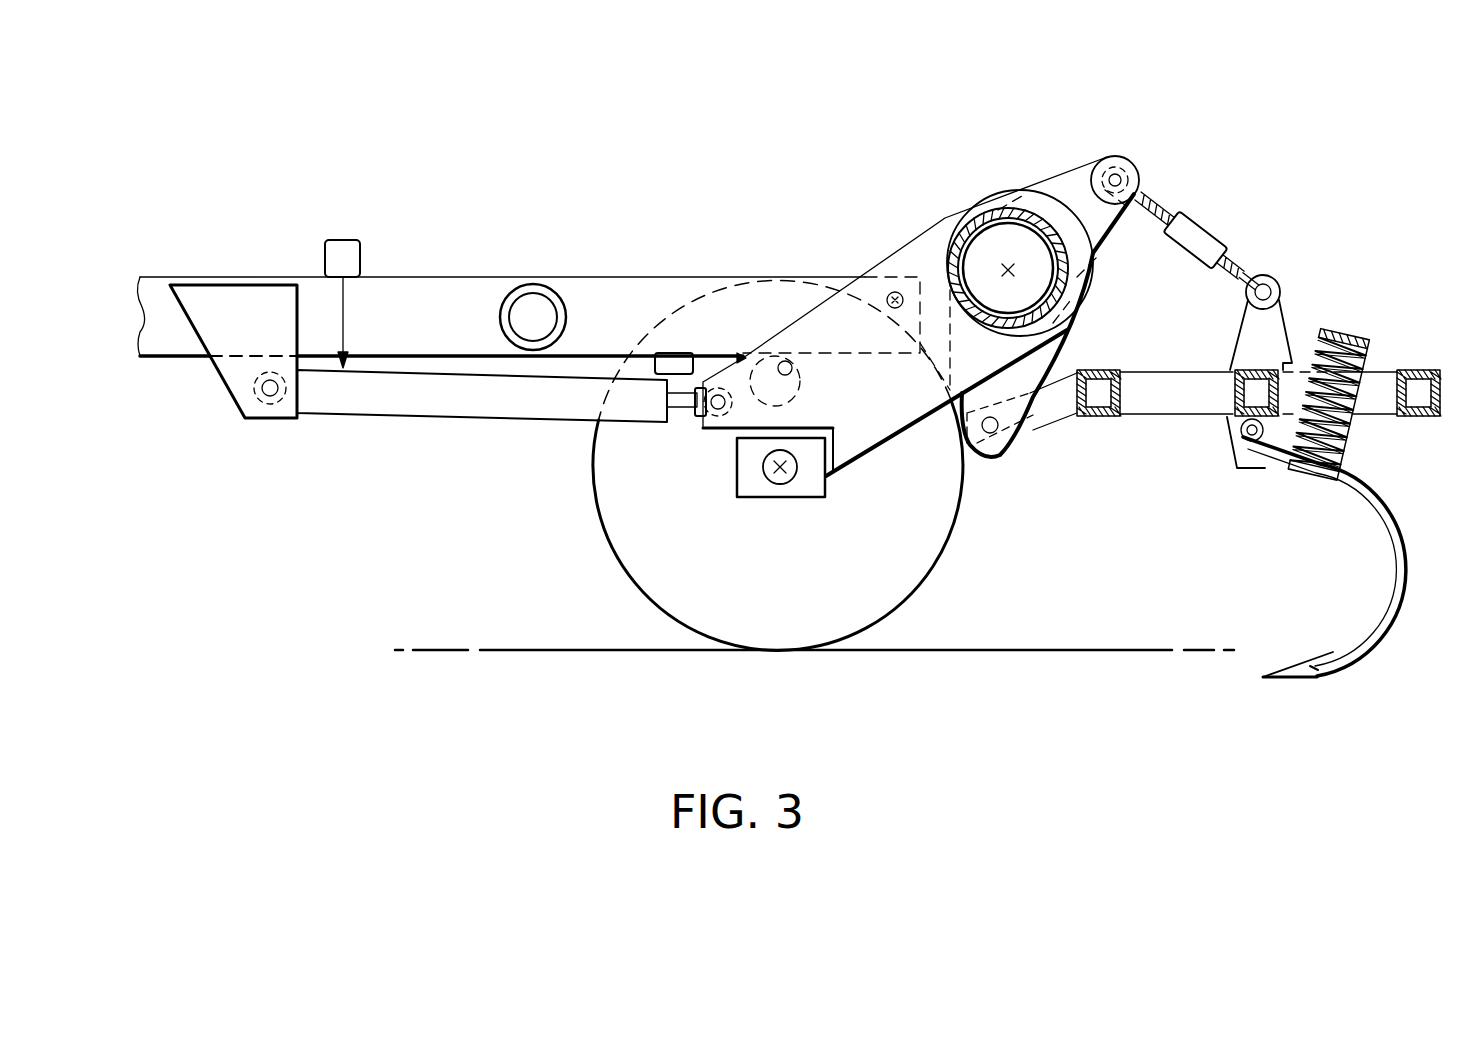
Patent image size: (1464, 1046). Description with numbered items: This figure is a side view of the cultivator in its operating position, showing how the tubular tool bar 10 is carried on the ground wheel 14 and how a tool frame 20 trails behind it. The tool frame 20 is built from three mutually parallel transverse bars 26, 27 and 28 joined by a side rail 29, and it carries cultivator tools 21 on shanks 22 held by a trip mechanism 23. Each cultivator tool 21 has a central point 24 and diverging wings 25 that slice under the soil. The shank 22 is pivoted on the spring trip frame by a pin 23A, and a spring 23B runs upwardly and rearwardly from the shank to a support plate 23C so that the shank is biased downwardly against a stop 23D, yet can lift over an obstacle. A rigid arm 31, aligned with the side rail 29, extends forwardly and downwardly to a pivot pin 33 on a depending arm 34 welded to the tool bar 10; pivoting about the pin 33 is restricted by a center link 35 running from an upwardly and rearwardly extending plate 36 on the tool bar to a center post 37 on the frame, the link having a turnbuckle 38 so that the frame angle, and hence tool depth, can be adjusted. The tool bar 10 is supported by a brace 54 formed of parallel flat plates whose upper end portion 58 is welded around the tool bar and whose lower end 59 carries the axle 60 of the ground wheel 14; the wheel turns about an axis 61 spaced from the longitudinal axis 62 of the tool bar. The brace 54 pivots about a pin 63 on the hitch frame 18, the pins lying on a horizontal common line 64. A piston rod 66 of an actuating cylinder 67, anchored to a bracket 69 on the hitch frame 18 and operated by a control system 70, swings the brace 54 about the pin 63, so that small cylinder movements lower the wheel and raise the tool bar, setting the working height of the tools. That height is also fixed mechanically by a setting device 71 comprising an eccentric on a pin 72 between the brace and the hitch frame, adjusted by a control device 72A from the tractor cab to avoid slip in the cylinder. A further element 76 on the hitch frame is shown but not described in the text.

The tool bar 10 is at (958, 220).
The ground wheel 14 is at (616, 565).
The hitch frame 18 is at (601, 262).
The tool frame 20 is at (1160, 362).
The cultivator tool 21 is at (1289, 656).
The shank 22 is at (1393, 530).
The trip mechanism 23 is at (1378, 343).
The pin 23A is at (1246, 434).
The spring 23B is at (1340, 440).
The support plate 23C is at (1340, 334).
The stop 23D is at (1256, 475).
The central point 24 is at (1263, 678).
The diverging wings 25 is at (1312, 680).
The transverse bar 26 is at (1407, 370).
The transverse bar 27 is at (1250, 370).
The transverse bar 28 is at (1103, 346).
The side rail 29 is at (1251, 419).
The rigid arm 31 is at (1058, 412).
The pivot pin 33 is at (978, 430).
The depending arm 34 is at (1008, 460).
The center link 35 is at (1186, 210).
The plate 36 is at (1085, 170).
The center post 37 is at (1284, 300).
The turnbuckle 38 is at (1210, 228).
The brace 54 is at (925, 257).
The upper end portion 58 is at (1050, 195).
The lower end 59 is at (858, 456).
The axle 60 is at (780, 490).
The axis 61 is at (770, 447).
The longitudinal axis 62 is at (1026, 266).
The pin 63 is at (895, 292).
The common line 64 is at (889, 308).
The piston rod 66 is at (692, 410).
The actuating cylinder 67 is at (478, 410).
The bracket 69 is at (230, 375).
The control system 70 is at (340, 238).
The mechanical setting device 71 is at (797, 392).
The pin 72 is at (792, 370).
The control device 72A is at (676, 353).
The tool bar tube 76 is at (452, 298).